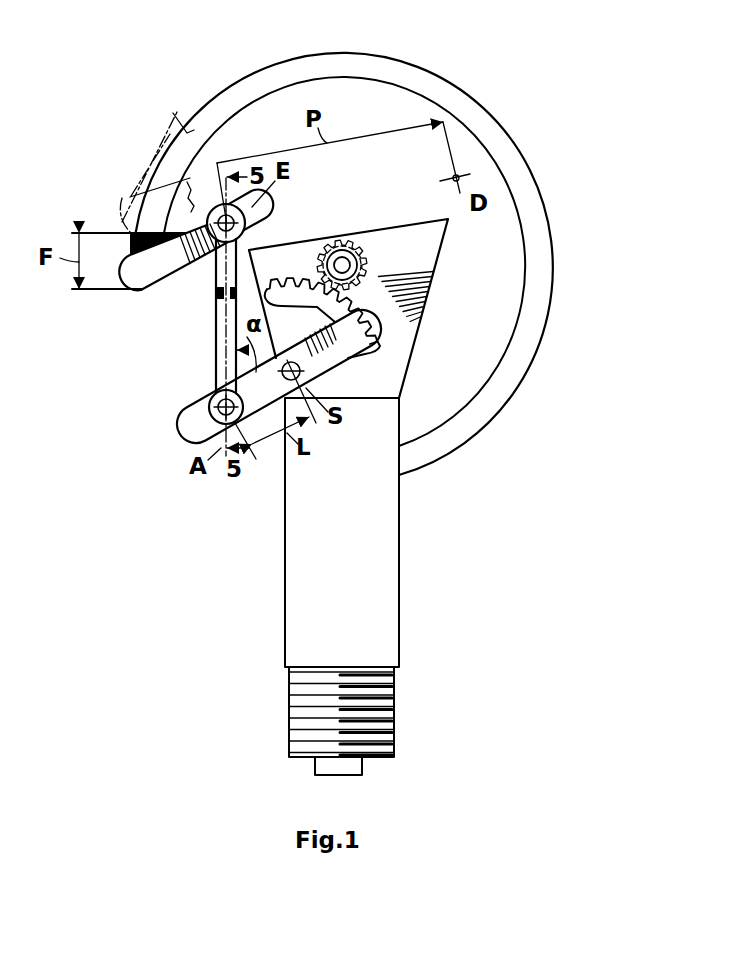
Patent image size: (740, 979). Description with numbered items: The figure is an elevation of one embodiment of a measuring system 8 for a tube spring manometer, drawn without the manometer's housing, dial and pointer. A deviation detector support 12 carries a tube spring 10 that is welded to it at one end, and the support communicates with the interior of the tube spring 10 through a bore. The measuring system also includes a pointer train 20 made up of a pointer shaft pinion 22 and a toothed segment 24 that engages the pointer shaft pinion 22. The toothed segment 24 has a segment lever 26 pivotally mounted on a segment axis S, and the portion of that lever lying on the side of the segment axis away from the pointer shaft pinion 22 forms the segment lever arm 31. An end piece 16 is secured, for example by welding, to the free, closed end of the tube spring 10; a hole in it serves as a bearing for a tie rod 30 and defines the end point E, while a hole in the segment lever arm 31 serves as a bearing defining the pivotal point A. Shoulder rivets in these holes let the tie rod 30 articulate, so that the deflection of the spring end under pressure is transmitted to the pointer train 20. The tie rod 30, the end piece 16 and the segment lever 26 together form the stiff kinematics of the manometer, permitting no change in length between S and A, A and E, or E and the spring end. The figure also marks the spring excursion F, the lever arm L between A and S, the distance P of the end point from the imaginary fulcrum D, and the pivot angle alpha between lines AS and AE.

The measuring system 8 is at (413, 64).
The tube spring 10 is at (522, 169).
The deviation detector support 12 is at (399, 558).
The end piece 16 is at (265, 211).
The pointer train 20 is at (423, 316).
The pointer shaft pinion 22 is at (352, 252).
The toothed segment 24 is at (352, 299).
The segment lever 26 is at (339, 378).
The tie rod 30 is at (216, 330).
The segment lever arm 31 is at (186, 429).